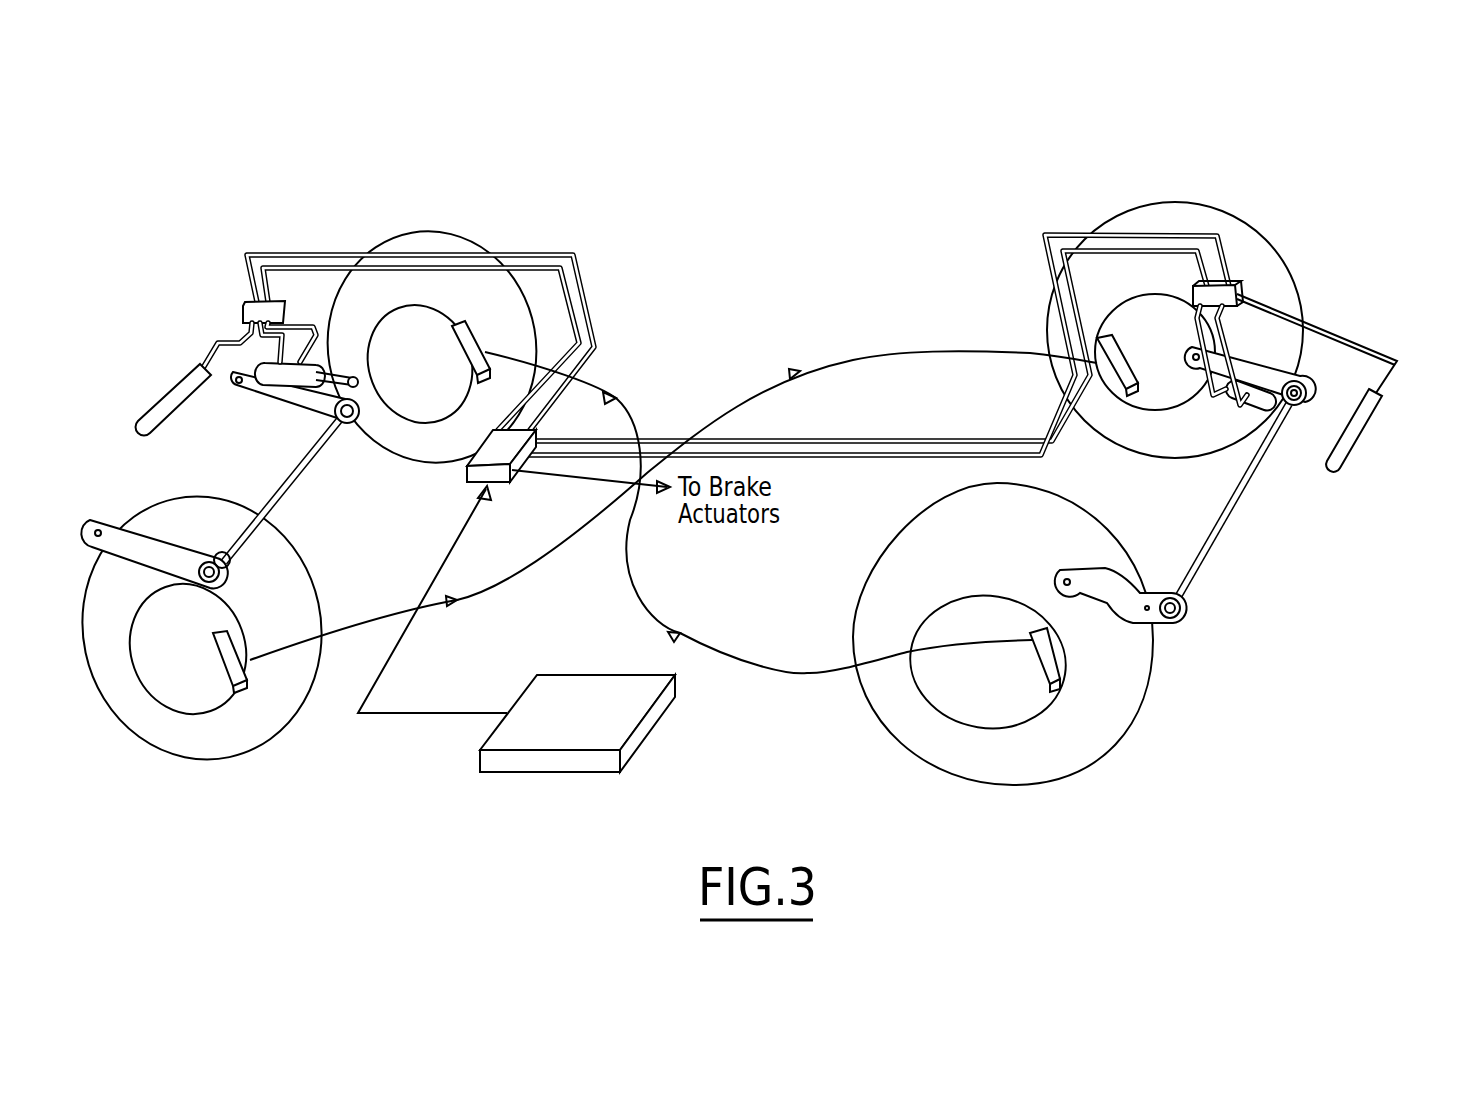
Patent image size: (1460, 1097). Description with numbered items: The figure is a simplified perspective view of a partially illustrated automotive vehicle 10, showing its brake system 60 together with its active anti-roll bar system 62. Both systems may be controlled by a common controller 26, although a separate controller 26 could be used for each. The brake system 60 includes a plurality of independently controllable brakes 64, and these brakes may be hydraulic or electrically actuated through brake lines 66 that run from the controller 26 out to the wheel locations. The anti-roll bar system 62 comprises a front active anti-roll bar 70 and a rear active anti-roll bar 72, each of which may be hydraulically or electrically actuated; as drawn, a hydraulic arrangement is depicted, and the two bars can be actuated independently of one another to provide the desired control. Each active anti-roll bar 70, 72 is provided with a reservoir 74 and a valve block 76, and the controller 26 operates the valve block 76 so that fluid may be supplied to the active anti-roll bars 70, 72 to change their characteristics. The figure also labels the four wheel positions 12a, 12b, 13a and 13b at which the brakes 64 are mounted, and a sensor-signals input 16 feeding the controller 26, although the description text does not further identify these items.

The automotive vehicle 10 is at (795, 225).
The front wheel 12a is at (430, 240).
The front wheel 12b is at (218, 750).
The rear wheel 13a is at (1202, 213).
The rear wheel 13b is at (1122, 708).
The sensor signals input 16 is at (571, 773).
The controller 26 is at (467, 478).
The brake system 60 is at (780, 675).
The anti-roll bar system 62 is at (598, 342).
The brakes 64 is at (468, 335).
The brake lines 66 is at (890, 352).
The front active anti-roll bar 70 is at (290, 463).
The rear active anti-roll bar 72 is at (1223, 532).
The reservoir 74 is at (173, 405).
The valve block 76 is at (244, 303).